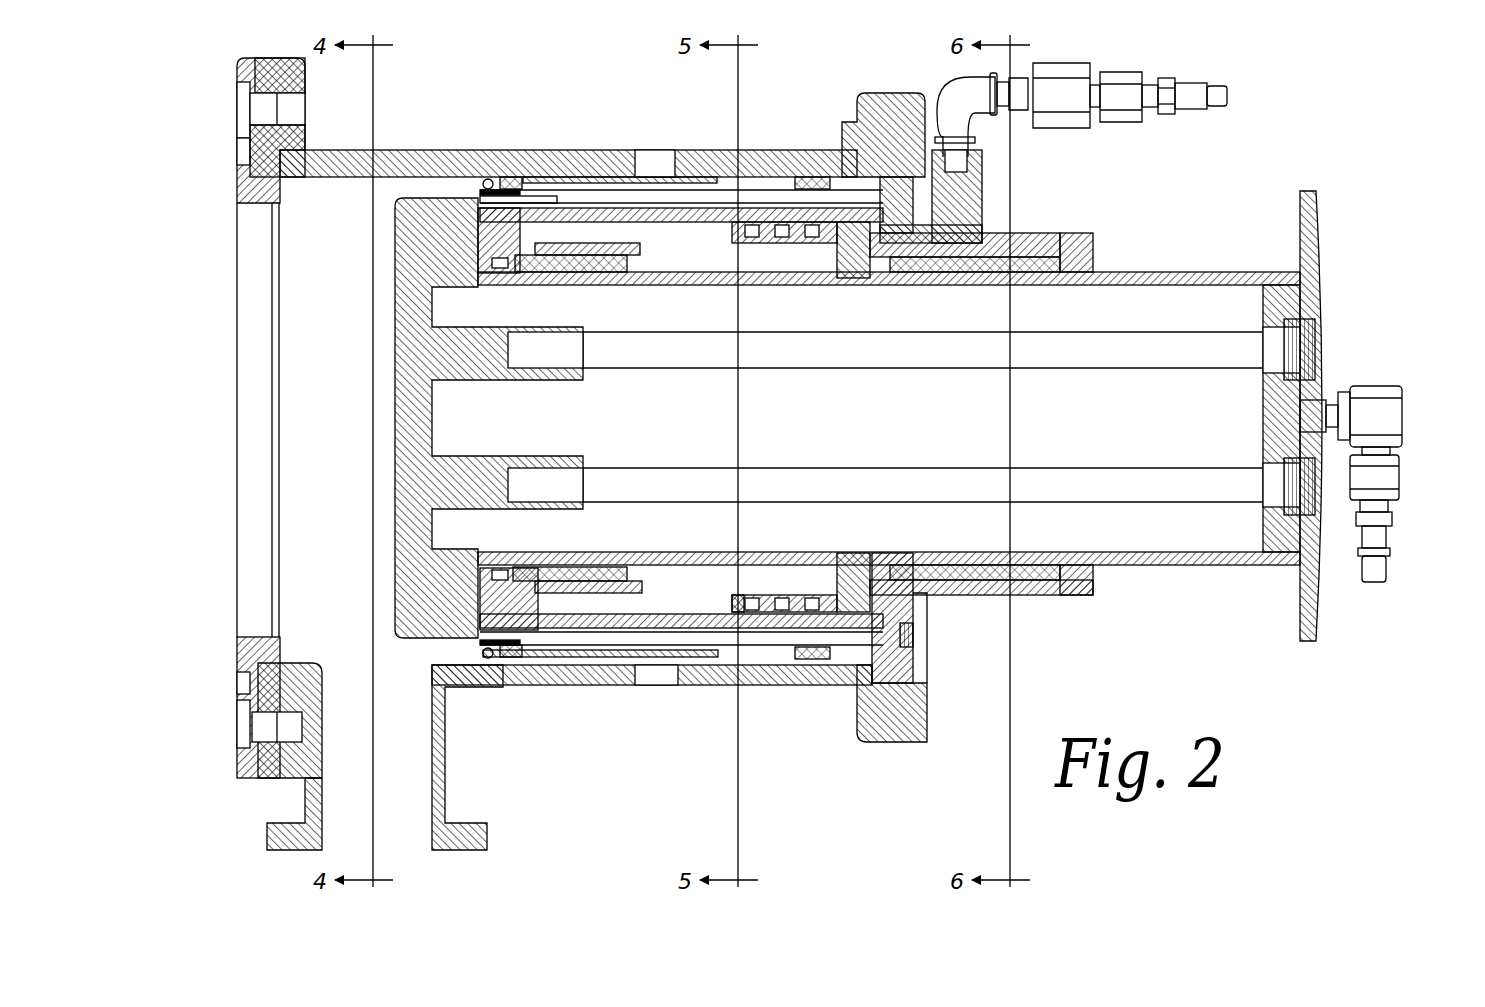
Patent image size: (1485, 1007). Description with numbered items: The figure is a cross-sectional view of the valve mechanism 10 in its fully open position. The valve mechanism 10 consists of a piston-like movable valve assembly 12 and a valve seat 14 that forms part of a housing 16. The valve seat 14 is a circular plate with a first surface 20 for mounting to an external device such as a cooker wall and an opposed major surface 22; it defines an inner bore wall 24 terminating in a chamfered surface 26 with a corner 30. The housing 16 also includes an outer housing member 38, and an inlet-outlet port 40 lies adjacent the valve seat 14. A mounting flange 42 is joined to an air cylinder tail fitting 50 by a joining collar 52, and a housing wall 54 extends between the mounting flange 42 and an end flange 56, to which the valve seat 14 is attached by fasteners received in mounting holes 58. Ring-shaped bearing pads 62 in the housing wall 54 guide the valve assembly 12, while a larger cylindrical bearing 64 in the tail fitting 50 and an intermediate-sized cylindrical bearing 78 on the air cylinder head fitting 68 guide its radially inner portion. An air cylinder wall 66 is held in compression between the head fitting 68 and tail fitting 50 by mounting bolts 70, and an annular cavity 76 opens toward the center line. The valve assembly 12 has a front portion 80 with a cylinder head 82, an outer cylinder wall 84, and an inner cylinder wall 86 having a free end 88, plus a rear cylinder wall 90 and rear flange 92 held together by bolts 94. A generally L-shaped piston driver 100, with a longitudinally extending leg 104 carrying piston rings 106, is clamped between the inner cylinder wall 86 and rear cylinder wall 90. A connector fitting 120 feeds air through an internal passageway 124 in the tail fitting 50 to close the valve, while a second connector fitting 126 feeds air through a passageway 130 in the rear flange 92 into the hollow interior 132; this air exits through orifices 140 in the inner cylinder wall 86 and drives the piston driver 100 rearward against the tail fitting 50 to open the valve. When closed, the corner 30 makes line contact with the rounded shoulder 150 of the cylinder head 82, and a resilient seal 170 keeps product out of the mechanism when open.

The valve mechanism 10 is at (762, 112).
The movable valve assembly 12 is at (393, 238).
The valve seat 14 is at (237, 655).
The housing 16 is at (262, 835).
The first surface 20 is at (237, 180).
The opposed major surface 22 is at (290, 655).
The inner bore wall 24 is at (245, 637).
The chamfered surface 26 is at (279, 630).
The corner 30 is at (285, 640).
The outer housing member 38 is at (345, 150).
The inlet-outlet port 40 is at (398, 838).
The mounting flange 42 is at (857, 705).
The air cylinder tail fitting 50 is at (985, 180).
The joining collar 52 is at (872, 742).
The housing wall 54 is at (572, 686).
The end flange 56 is at (305, 72).
The mounting holes 58 is at (262, 118).
The bearing pads 62 is at (535, 150).
The cylindrical bearing 64 is at (1035, 565).
The air cylinder wall 66 is at (630, 232).
The air cylinder head fitting 68 is at (557, 246).
The mounting bolts 70 is at (802, 196).
The annular cavity 76 is at (674, 605).
The intermediate-sized cylindrical bearing 78 is at (615, 578).
The front portion 80 is at (395, 315).
The cylinder head 82 is at (395, 495).
The outer cylinder wall 84 is at (660, 657).
The inner cylinder wall 86 is at (578, 565).
The free end 88 is at (925, 283).
The rear cylinder wall 90 is at (1190, 286).
The rear flange 92 is at (1322, 212).
The bolts 94 is at (1055, 358).
The piston driver 100 is at (733, 238).
The longitudinally extending leg 104 is at (732, 606).
The piston rings 106 is at (823, 596).
The connector fitting 120 is at (1068, 90).
The internal passageway 124 is at (990, 235).
The second connector fitting 126 is at (1390, 403).
The passageway 130 is at (1290, 417).
The hollow interior 132 is at (810, 438).
The orifices 140 is at (852, 280).
The rounded shoulder 150 is at (468, 645).
The resilient seal 170 is at (492, 686).